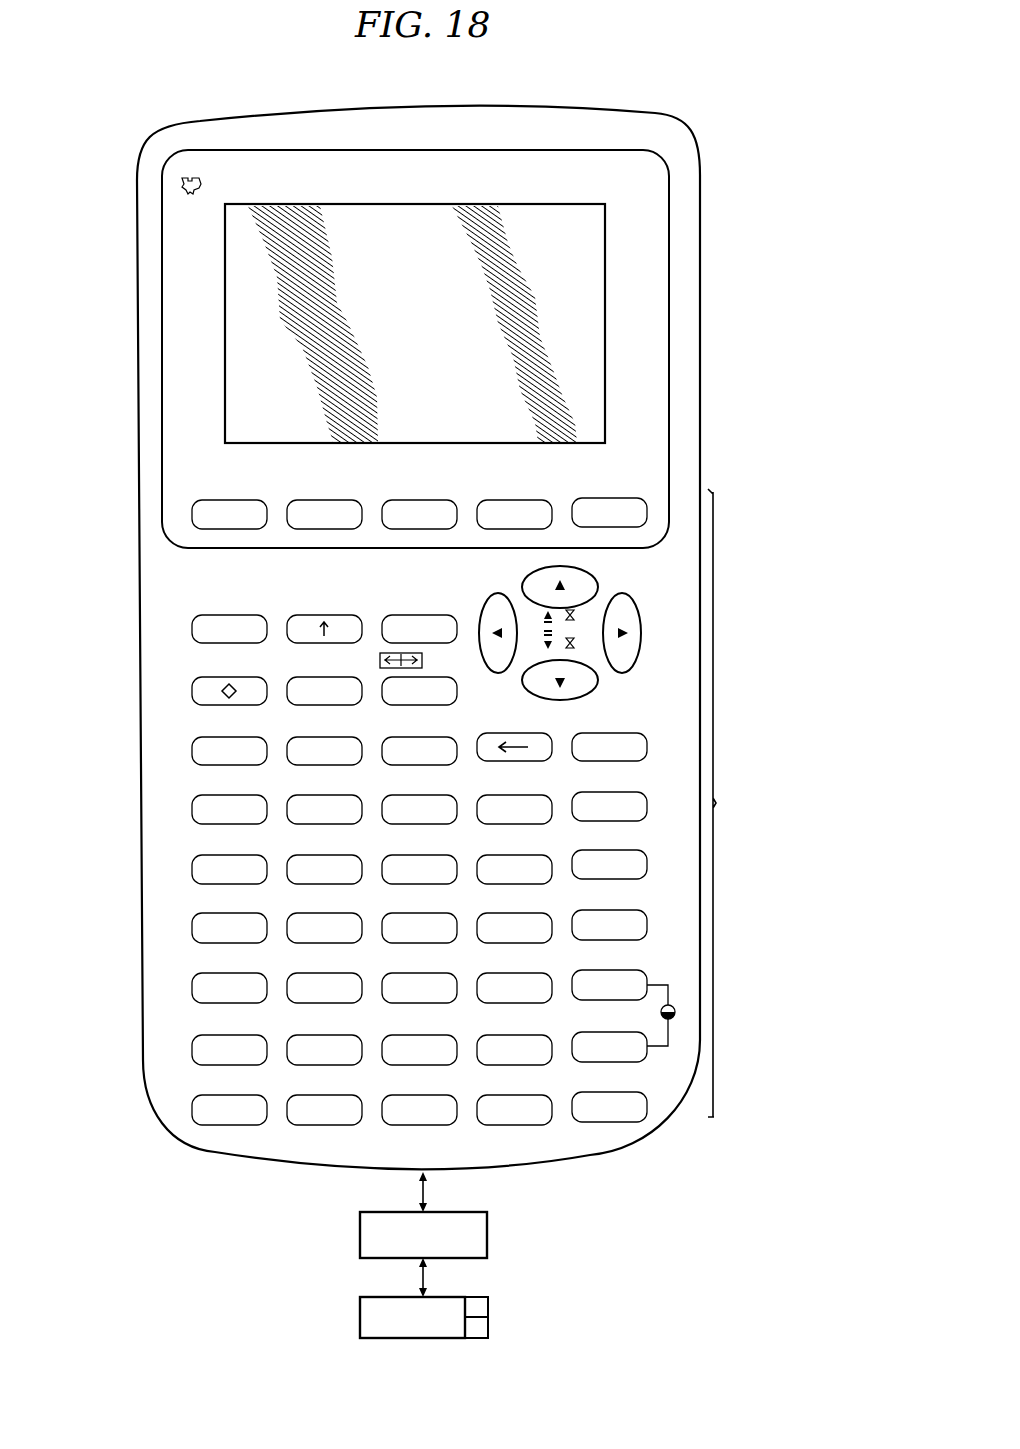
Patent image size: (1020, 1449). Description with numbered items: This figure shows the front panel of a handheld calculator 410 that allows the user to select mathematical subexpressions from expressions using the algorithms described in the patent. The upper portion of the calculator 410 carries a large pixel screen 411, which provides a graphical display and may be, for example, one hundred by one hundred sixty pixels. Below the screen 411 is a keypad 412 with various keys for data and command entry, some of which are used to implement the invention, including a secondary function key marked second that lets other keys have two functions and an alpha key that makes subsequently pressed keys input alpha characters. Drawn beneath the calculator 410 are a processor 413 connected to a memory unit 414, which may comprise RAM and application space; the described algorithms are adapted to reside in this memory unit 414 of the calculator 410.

The calculator 410 is at (137, 620).
The screen 411 is at (431, 334).
The keypad 412 is at (738, 808).
The processor 413 is at (480, 1222).
The memory unit 414 is at (360, 1318).